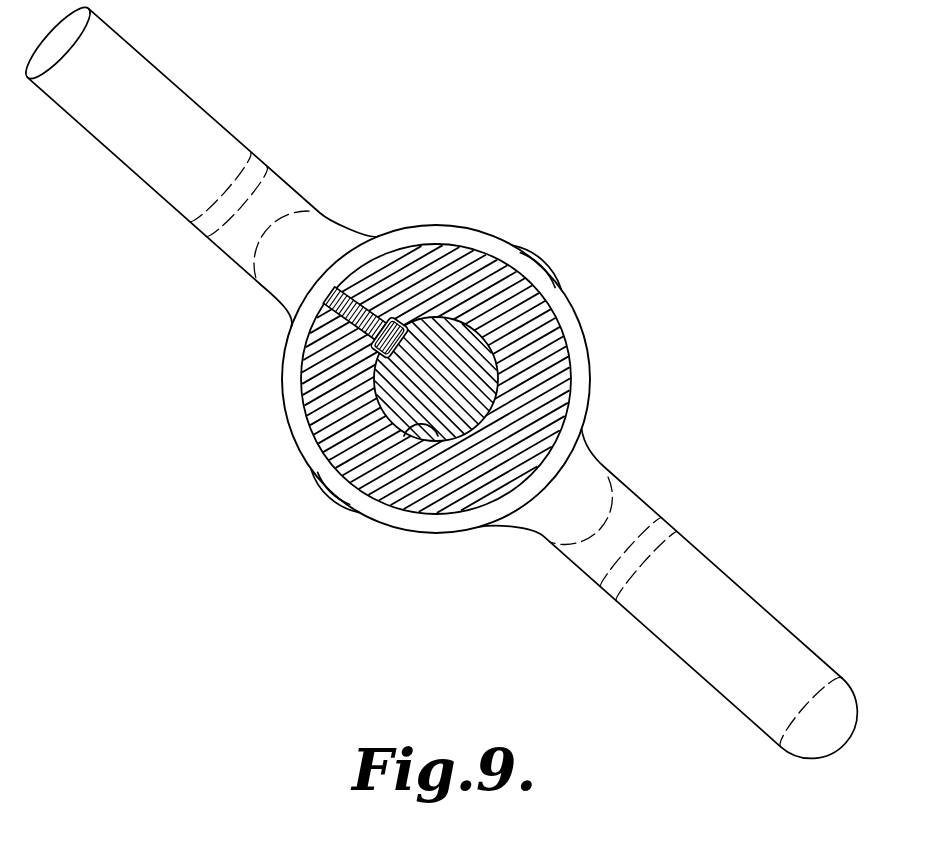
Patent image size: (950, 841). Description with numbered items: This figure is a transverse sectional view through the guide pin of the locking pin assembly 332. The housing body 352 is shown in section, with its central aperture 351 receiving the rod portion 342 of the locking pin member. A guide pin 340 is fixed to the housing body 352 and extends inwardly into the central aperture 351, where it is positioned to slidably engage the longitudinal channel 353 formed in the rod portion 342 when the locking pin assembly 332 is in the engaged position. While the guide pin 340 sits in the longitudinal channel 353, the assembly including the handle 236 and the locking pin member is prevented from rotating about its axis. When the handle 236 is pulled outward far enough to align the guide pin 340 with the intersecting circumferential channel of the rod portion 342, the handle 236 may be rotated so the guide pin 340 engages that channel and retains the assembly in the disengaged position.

The handle 236 is at (183, 97).
The locking pin assembly 332 is at (748, 167).
The guide pin 340 is at (377, 319).
The rod portion 342 is at (470, 327).
The central aperture 351 is at (438, 436).
The housing body 352 is at (574, 323).
The longitudinal channel 353 is at (305, 344).